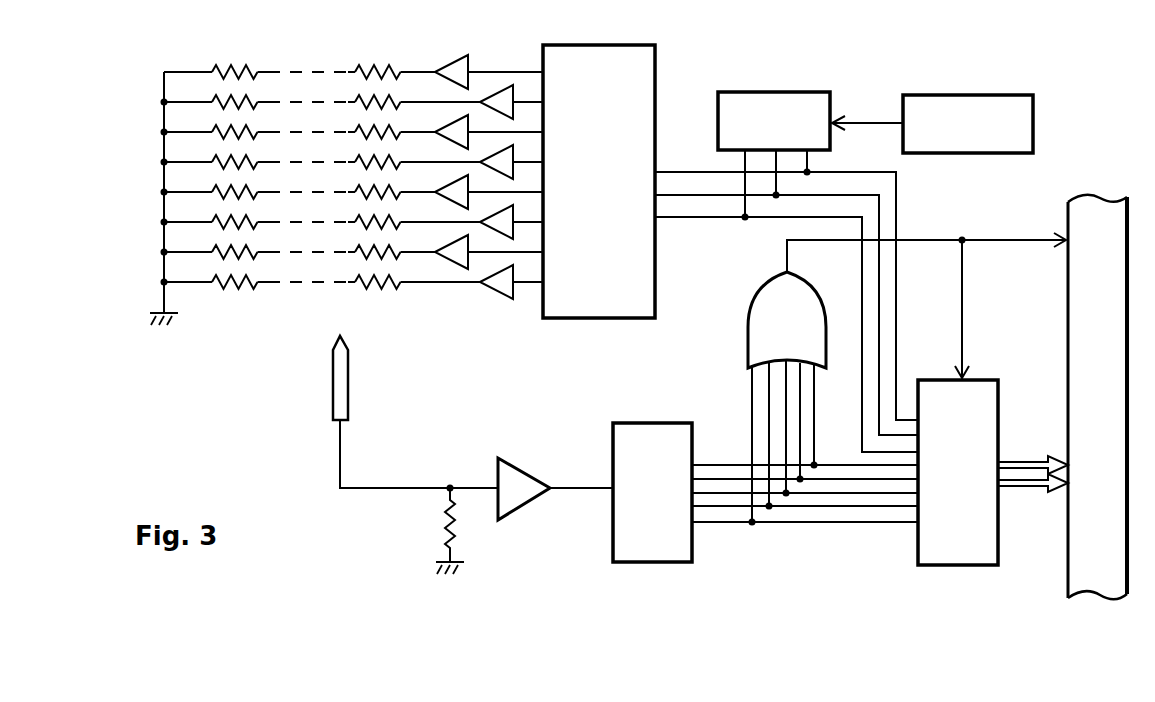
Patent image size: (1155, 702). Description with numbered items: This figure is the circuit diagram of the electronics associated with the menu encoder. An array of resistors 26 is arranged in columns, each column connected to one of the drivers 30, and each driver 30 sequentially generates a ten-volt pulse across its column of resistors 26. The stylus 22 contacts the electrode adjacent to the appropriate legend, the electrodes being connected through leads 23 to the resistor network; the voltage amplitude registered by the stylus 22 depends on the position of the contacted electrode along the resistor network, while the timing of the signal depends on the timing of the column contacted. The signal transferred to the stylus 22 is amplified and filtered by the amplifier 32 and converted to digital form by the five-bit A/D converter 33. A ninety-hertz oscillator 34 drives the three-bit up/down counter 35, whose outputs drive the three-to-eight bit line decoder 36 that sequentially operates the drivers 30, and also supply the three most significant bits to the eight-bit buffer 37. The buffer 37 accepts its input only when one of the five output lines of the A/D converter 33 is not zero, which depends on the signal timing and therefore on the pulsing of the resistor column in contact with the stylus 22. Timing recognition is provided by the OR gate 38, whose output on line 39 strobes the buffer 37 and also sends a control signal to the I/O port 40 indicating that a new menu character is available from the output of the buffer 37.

The stylus 22 is at (333, 393).
The electrode leads 23 is at (342, 188).
The array of resistors 26 is at (236, 70).
The drivers 30 is at (488, 96).
The amplifier 32 is at (537, 476).
The 5-bit A/D converter 33 is at (654, 422).
The 90 Hz oscillator 34 is at (970, 92).
The 3-bit up/down counter 35 is at (782, 90).
The 3-to-8 bit line decoder 36 is at (566, 322).
The 8-bit buffer 37 is at (951, 568).
The OR gate 38 is at (758, 295).
The line 39 is at (962, 236).
The I/O port 40 is at (1108, 192).